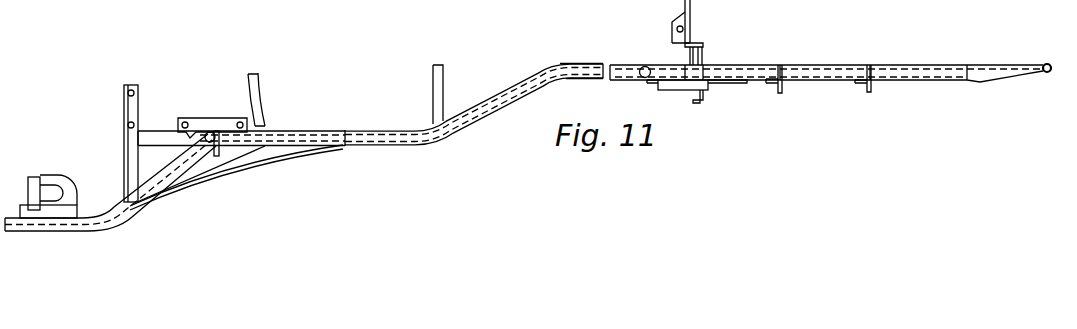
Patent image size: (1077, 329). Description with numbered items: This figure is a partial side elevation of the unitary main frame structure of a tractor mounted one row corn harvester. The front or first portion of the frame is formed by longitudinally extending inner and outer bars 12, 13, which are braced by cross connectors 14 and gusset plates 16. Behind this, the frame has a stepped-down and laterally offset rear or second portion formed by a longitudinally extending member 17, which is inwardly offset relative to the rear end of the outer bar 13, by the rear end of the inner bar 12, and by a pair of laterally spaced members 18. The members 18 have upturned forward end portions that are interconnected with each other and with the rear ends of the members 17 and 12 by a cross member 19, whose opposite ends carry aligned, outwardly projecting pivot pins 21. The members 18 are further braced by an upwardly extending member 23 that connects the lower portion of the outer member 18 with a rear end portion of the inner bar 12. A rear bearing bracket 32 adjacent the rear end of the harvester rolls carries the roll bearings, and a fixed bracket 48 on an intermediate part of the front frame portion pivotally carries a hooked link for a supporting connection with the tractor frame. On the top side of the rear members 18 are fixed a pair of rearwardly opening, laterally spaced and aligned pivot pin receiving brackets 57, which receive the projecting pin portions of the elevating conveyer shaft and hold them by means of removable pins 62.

The inner bar 12 is at (905, 64).
The outer bar 13 is at (582, 63).
The cross connector 14 is at (395, 131).
The gusset plate 16 is at (352, 147).
The longitudinally extending member 17 is at (300, 131).
The laterally spaced members 18 is at (100, 221).
The cross member 19 is at (217, 157).
The pivot pins 21 is at (212, 133).
The upwardly extending member 23 is at (277, 150).
The rear bearing bracket 32 is at (444, 78).
The fixed bracket 48 is at (672, 30).
The pivot pin receiving brackets 57 is at (70, 180).
The removable pins 62 is at (30, 192).